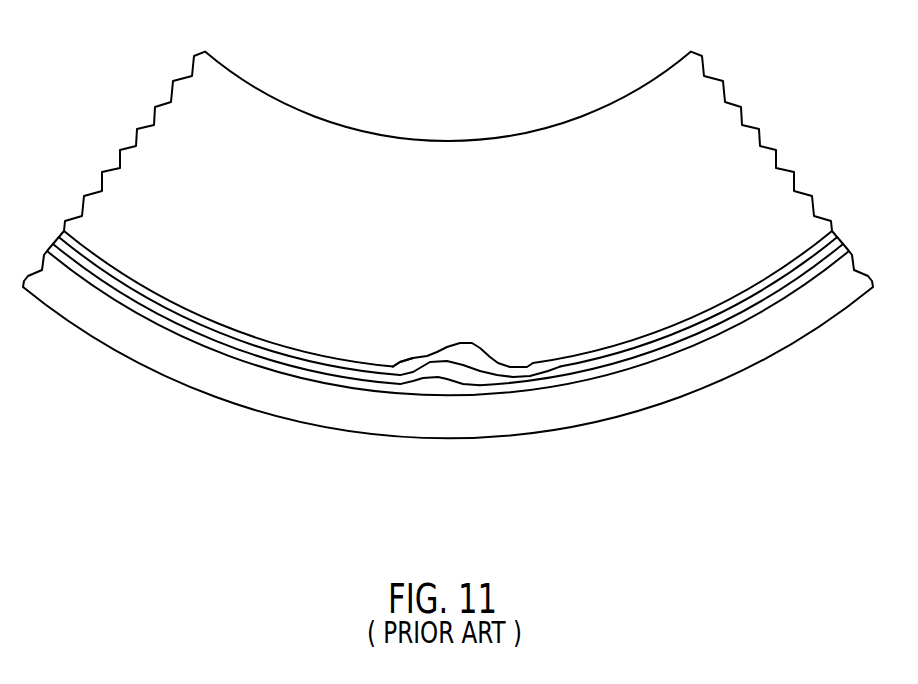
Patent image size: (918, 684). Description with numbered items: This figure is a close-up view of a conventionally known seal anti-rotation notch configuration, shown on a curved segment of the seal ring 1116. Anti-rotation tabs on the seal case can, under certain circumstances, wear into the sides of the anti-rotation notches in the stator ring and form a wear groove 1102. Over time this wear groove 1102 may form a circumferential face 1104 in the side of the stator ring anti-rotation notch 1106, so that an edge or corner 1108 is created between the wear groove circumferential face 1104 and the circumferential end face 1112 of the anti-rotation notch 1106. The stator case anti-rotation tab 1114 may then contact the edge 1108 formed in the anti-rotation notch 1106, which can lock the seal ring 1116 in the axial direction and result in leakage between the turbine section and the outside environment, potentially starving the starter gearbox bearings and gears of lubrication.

The seal ring 1116 is at (299, 212).
The wear groove 1102 is at (388, 363).
The wear groove circumferential face 1104 is at (415, 357).
The stator ring anti-rotation notch 1106 is at (463, 355).
The edge 1108 is at (433, 357).
The circumferential end face 1112 is at (448, 345).
The stator case anti-rotation tab 1114 is at (433, 370).